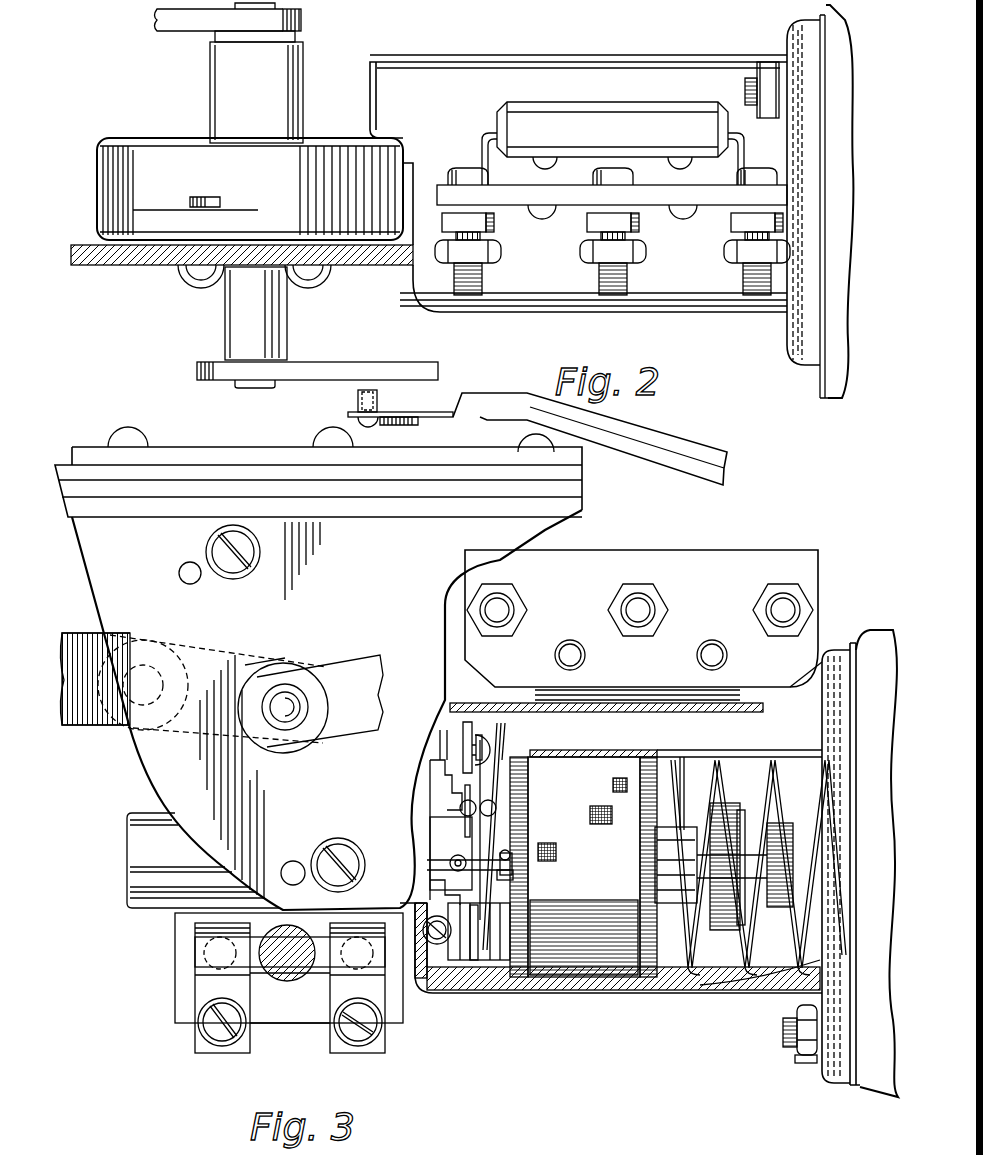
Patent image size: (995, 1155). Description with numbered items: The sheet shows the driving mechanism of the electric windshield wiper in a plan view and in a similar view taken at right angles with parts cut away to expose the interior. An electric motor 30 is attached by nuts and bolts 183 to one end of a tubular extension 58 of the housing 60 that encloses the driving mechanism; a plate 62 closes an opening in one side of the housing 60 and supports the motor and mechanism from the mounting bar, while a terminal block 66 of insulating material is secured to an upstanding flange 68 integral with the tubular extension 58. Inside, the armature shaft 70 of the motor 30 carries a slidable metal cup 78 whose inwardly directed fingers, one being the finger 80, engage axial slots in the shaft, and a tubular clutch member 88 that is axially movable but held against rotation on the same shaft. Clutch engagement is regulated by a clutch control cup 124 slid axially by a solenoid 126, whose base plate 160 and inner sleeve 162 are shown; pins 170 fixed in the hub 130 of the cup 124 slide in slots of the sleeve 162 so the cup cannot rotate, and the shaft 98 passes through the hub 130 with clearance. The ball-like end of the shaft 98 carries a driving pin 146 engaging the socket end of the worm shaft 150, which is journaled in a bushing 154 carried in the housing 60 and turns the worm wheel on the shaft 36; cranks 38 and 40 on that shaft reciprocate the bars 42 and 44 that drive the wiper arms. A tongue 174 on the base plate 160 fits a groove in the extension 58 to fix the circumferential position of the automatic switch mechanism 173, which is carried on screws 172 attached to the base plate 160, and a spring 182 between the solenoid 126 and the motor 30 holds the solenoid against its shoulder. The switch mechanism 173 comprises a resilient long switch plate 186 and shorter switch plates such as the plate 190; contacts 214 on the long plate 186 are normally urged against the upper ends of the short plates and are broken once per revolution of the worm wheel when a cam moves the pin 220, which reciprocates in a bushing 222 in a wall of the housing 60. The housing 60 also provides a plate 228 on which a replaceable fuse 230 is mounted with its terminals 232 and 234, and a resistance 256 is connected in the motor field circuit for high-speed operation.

In FIG. 3, the electric motor 30 is at (830, 862).
In FIG. 3, the shaft 36 is at (283, 720).
In FIG. 2, the crank 38 is at (178, 22).
In FIG. 3, the crank 38 is at (227, 672).
In FIG. 2, the crank 40 is at (317, 373).
In FIG. 3, the crank 40 is at (355, 670).
In FIG. 3, the reciprocating bar 42 is at (87, 715).
In FIG. 2, the reciprocating bar 44 is at (660, 472).
In FIG. 2, the tubular extension 58 is at (518, 300).
In FIG. 3, the tubular extension 58 is at (657, 703).
In FIG. 2, the housing 60 is at (130, 160).
In FIG. 3, the housing 60 is at (607, 1012).
In FIG. 2, the plate 62 is at (110, 268).
In FIG. 3, the plate 62 is at (160, 780).
In FIG. 2, the terminal block 66 is at (660, 200).
In FIG. 3, the terminal block 66 is at (725, 578).
In FIG. 2, the upstanding flange 68 is at (508, 180).
In FIG. 3, the upstanding flange 68 is at (555, 690).
In FIG. 3, the armature shaft 70 is at (797, 873).
In FIG. 3, the metal cup 78 is at (790, 820).
In FIG. 3, the finger 80 is at (780, 935).
In FIG. 3, the tubular clutch member 88 is at (750, 825).
In FIG. 3, the shaft 98 is at (505, 873).
In FIG. 3, the clutch control cup 124 is at (740, 800).
In FIG. 3, the solenoid 126 is at (584, 867).
In FIG. 3, the hub 130 is at (714, 867).
In FIG. 3, the driving pin 146 is at (457, 862).
In FIG. 3, the worm shaft 150 is at (500, 876).
In FIG. 3, the bushing 154 is at (447, 845).
In FIG. 3, the base plate 160 is at (520, 815).
In FIG. 3, the inner sleeve 162 is at (668, 845).
In FIG. 3, the pins 170 is at (693, 827).
In FIG. 3, the screws 172 is at (430, 990).
In FIG. 3, the automatic switch mechanism 173 is at (476, 963).
In FIG. 3, the tongue 174 is at (523, 738).
In FIG. 3, the spring 182 is at (710, 992).
In FIG. 2, the nuts and bolts 183 is at (753, 62).
In FIG. 3, the nuts and bolts 183 is at (800, 1063).
In FIG. 3, the long switch plate 186 is at (510, 718).
In FIG. 3, the short switch plate 190 is at (470, 788).
In FIG. 3, the terminals 214 is at (468, 800).
In FIG. 3, the pin 220 is at (452, 695).
In FIG. 3, the bushing 222 is at (472, 735).
In FIG. 3, the plate 228 is at (305, 1015).
In FIG. 3, the replaceable fuse 230 is at (258, 940).
In FIG. 3, the terminal 232 is at (200, 1030).
In FIG. 3, the terminal 234 is at (345, 1045).
In FIG. 2, the resistance 256 is at (597, 127).